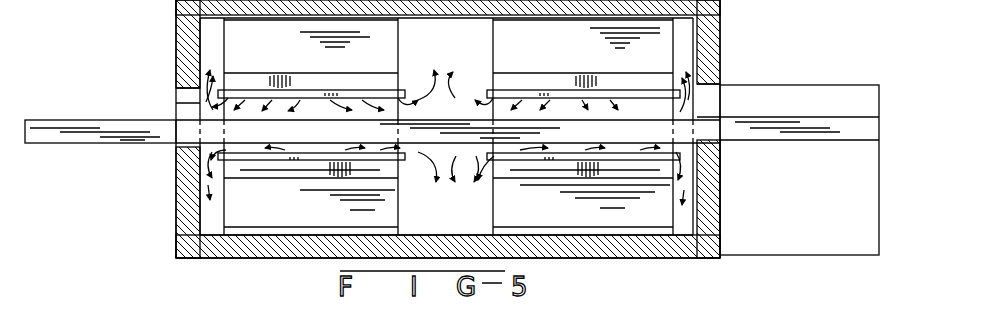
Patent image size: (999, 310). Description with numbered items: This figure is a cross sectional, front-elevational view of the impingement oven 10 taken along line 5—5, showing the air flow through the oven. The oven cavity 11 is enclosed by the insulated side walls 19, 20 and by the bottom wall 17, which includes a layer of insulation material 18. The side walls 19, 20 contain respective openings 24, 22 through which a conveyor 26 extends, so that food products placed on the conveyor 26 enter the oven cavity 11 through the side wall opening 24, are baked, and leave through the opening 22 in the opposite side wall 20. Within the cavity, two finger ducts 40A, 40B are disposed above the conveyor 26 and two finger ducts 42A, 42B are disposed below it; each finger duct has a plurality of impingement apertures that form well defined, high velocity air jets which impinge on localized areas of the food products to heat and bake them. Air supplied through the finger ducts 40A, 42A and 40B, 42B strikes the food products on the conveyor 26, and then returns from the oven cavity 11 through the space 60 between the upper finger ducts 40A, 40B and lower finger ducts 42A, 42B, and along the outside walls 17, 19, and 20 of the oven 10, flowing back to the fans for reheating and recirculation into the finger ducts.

The section line 5 is at (82, 0).
The impingement oven 10 is at (815, 25).
The oven cavity 11 is at (450, 52).
The bottom wall 17 is at (650, 259).
The insulation material 18 is at (567, 245).
The side wall 19 is at (176, 203).
The side wall 20 is at (722, 32).
The side wall opening 22 is at (709, 86).
The side wall opening 24 is at (199, 103).
The conveyor 26 is at (87, 135).
The finger duct 40A is at (278, 52).
The finger duct 40B is at (544, 52).
The finger duct 42A is at (320, 220).
The finger duct 42B is at (545, 220).
The space 60 is at (458, 220).